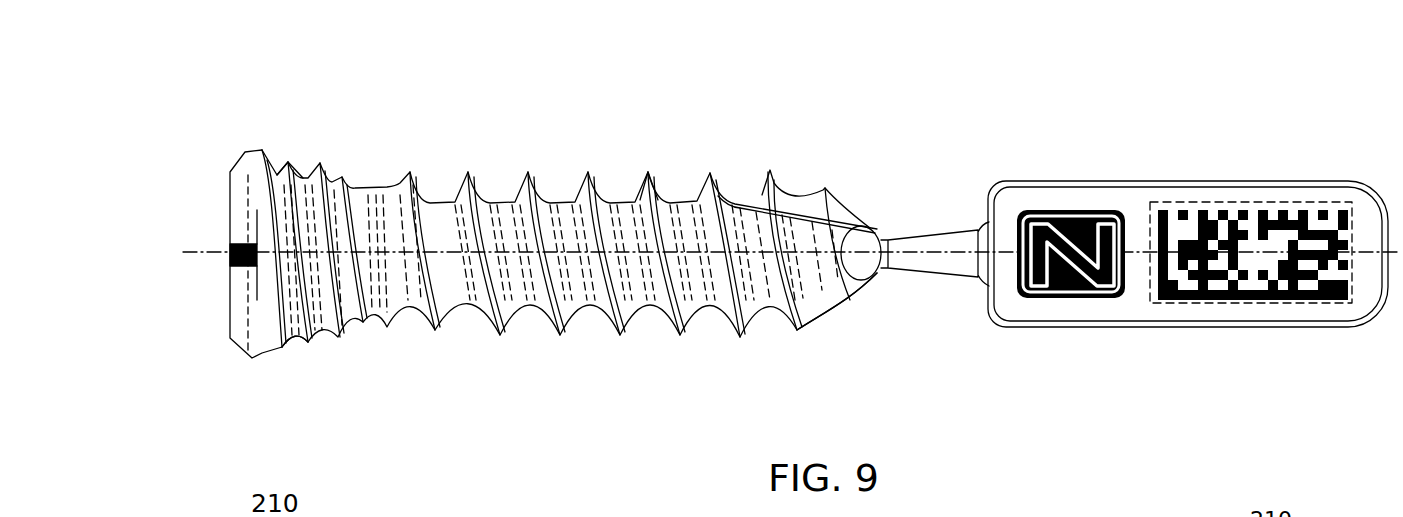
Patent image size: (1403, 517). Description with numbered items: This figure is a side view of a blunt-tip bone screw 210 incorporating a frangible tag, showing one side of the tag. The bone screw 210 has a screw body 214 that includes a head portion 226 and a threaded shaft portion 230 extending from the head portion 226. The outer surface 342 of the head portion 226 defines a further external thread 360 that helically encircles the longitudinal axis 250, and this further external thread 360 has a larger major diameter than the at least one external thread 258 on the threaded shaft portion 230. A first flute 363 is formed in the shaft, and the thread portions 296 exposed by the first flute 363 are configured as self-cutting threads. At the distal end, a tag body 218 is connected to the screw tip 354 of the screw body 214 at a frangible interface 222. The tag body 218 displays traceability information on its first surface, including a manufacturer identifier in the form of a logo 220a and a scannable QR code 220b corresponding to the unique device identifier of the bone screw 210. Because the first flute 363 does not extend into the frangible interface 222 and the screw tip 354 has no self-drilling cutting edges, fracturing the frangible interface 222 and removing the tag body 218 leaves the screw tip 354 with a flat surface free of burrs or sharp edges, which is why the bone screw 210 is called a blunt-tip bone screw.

The bone screw 210 is at (411, 40).
The screw body 214 is at (590, 130).
The tag body 218 is at (1234, 108).
The logo 220a is at (1077, 300).
The QR code 220b is at (1281, 305).
The frangible interface 222 is at (880, 272).
The head portion 226 is at (258, 366).
The threaded shaft portion 230 is at (527, 319).
The longitudinal axis 250 is at (193, 250).
The external thread 258 is at (654, 172).
The thread portions 296 is at (822, 178).
The outer surface 342 is at (304, 357).
The screw tip 354 is at (886, 225).
The further external thread 360 is at (306, 150).
The first flute 363 is at (812, 287).